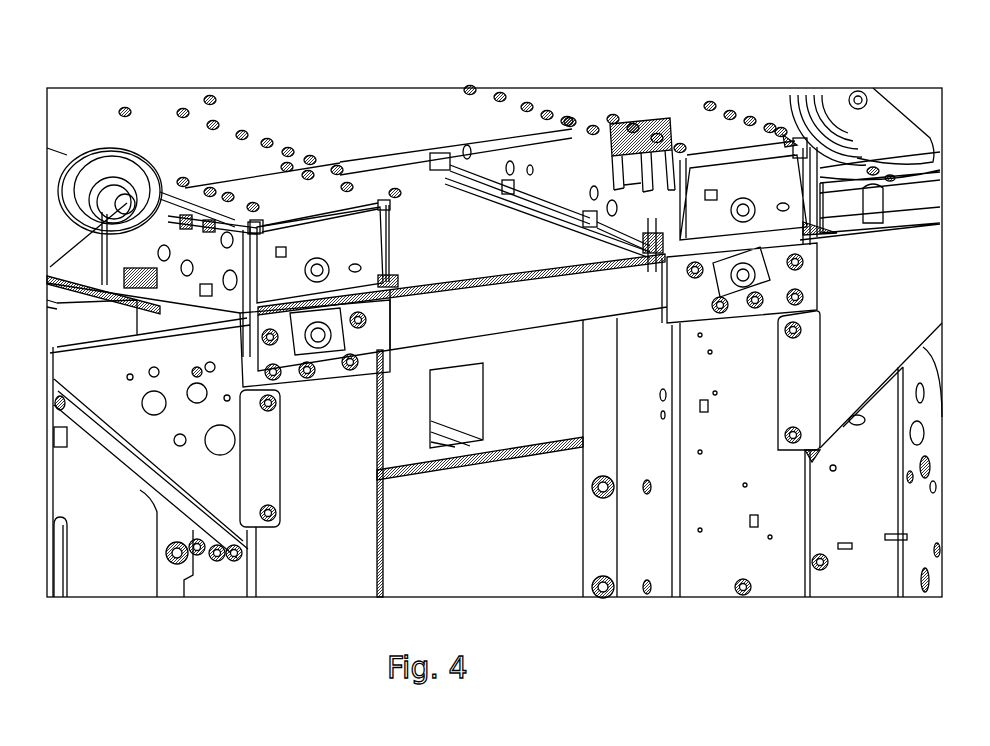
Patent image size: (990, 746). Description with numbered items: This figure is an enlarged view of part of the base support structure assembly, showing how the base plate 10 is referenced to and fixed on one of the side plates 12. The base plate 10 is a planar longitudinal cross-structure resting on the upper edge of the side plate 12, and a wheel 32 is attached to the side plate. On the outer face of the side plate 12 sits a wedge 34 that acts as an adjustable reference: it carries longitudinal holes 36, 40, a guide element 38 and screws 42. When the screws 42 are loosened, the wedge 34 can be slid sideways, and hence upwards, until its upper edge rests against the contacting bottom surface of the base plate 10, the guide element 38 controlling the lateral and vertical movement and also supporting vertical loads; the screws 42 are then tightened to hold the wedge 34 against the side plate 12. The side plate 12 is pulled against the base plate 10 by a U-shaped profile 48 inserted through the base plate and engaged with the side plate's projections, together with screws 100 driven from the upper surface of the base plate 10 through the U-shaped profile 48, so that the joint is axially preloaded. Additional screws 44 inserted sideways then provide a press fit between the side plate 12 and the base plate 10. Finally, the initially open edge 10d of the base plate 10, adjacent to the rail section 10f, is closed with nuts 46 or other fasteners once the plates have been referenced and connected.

The base plate 10 is at (90, 113).
The open edge of the base plate 10d is at (247, 205).
The frame rail section 10f is at (490, 153).
The side plate 12 is at (758, 385).
The wheel 32 is at (903, 131).
The wedge 34 is at (395, 332).
The longitudinal hole 36 is at (398, 273).
The guide element 38 is at (340, 278).
The longitudinal hole 40 is at (278, 297).
The screw 42 is at (240, 347).
The screw 44 is at (652, 133).
The nut 46 is at (190, 208).
The U-shaped profile 48 is at (620, 124).
The screw 100 is at (655, 130).